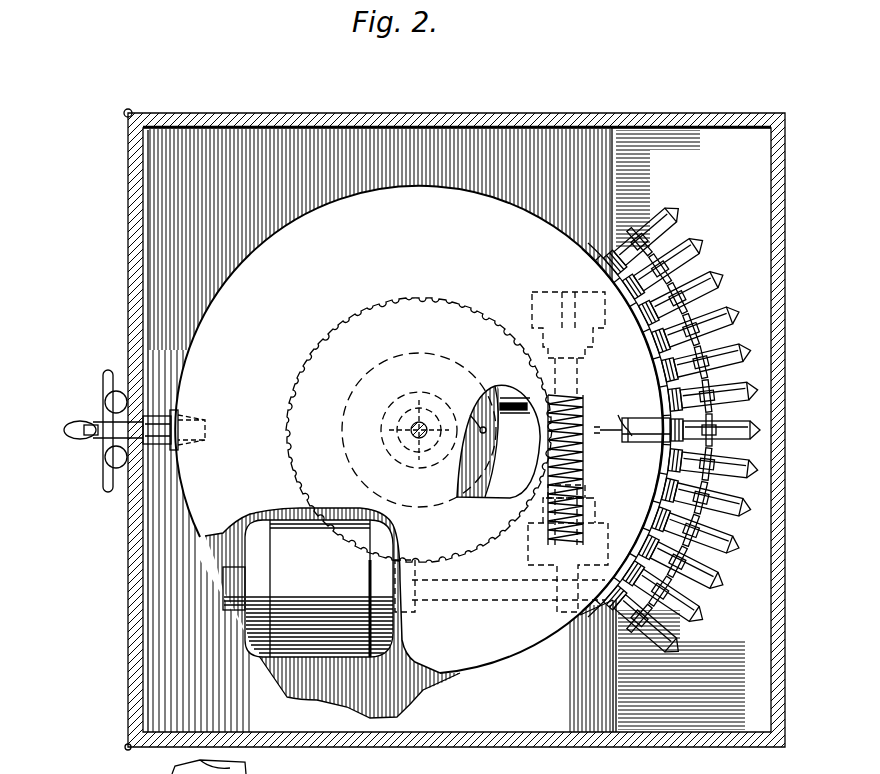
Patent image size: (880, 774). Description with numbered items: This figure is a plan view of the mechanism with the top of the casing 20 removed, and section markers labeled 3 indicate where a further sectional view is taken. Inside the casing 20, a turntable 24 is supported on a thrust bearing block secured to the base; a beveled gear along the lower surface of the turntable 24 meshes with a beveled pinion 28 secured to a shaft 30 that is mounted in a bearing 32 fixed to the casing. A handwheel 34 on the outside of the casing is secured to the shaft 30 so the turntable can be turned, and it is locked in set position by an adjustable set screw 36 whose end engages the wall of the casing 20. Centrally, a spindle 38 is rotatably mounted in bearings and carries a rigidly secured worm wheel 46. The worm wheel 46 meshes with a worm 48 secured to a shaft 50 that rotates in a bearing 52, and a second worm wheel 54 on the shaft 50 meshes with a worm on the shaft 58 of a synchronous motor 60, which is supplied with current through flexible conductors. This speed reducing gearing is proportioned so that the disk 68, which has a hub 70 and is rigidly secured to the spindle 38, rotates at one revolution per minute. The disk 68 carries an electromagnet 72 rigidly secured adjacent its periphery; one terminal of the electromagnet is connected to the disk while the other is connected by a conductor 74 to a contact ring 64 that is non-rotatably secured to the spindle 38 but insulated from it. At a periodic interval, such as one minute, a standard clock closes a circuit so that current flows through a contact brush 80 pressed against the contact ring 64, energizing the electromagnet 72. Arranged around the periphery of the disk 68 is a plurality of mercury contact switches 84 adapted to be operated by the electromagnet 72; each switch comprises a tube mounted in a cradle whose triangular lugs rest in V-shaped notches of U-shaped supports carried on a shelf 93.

The casing 20 is at (303, 718).
The turntable 24 is at (212, 545).
The beveled pinion 28 is at (185, 425).
The shaft 30 is at (192, 447).
The bearing 32 is at (148, 440).
The handwheel 34 is at (104, 482).
The adjustable set screw 36 is at (75, 438).
The spindle 38 is at (412, 428).
The worm wheel 46 is at (397, 430).
The worm 48 is at (631, 444).
The shaft 50 is at (590, 490).
The bearing 52 is at (545, 292).
The worm wheel 54 is at (596, 607).
The shaft 58 is at (442, 602).
The synchronous motor 60 is at (245, 628).
The contact ring 64 is at (488, 470).
The disk 68 is at (263, 265).
The hub 70 is at (360, 468).
The electromagnet 72 is at (586, 440).
The conductor 74 is at (470, 415).
The contact brush 80 is at (500, 388).
The mercury contact switches 84 is at (710, 280).
The shelf 93 is at (625, 710).
The section line 3 is at (622, 430).